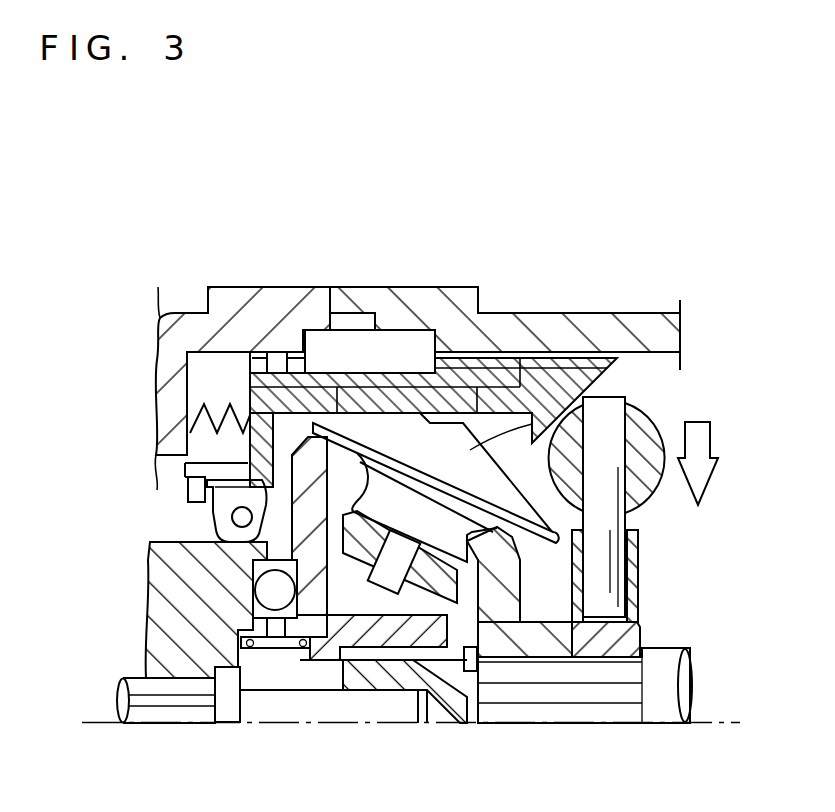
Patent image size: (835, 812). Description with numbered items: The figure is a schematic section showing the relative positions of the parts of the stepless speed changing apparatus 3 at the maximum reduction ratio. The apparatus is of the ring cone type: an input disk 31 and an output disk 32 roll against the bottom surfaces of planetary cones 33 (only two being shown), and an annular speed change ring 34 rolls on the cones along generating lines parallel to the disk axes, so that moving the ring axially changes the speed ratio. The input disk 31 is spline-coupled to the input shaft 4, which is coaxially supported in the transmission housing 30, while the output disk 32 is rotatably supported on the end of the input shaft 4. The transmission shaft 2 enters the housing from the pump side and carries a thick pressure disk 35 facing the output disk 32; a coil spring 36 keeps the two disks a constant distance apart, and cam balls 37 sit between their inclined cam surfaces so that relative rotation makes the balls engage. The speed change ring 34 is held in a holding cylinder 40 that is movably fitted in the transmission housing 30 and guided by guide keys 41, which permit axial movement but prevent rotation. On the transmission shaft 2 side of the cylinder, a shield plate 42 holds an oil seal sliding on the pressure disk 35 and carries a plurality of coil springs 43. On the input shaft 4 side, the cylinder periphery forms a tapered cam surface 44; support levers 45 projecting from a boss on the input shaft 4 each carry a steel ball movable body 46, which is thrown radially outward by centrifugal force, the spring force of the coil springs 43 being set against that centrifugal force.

The transmission shaft 2 is at (120, 703).
The stepless speed changing apparatus 3 is at (684, 386).
The input shaft 4 is at (690, 681).
The transmission housing 30 is at (588, 323).
The input disk 31 is at (517, 575).
The output disk 32 is at (297, 507).
The planetary cones 33 is at (531, 445).
The speed change ring 34 is at (443, 393).
The pressure disk 35 is at (160, 640).
The coil spring 36 is at (243, 650).
The cam balls 37 is at (263, 592).
The holding cylinder 40 is at (312, 397).
The guide keys 41 is at (405, 345).
The shield plate 42 is at (252, 396).
The coil springs 43 is at (192, 432).
The cam surface 44 is at (633, 352).
The support levers 45 is at (643, 515).
The movable bodies 46 is at (647, 420).